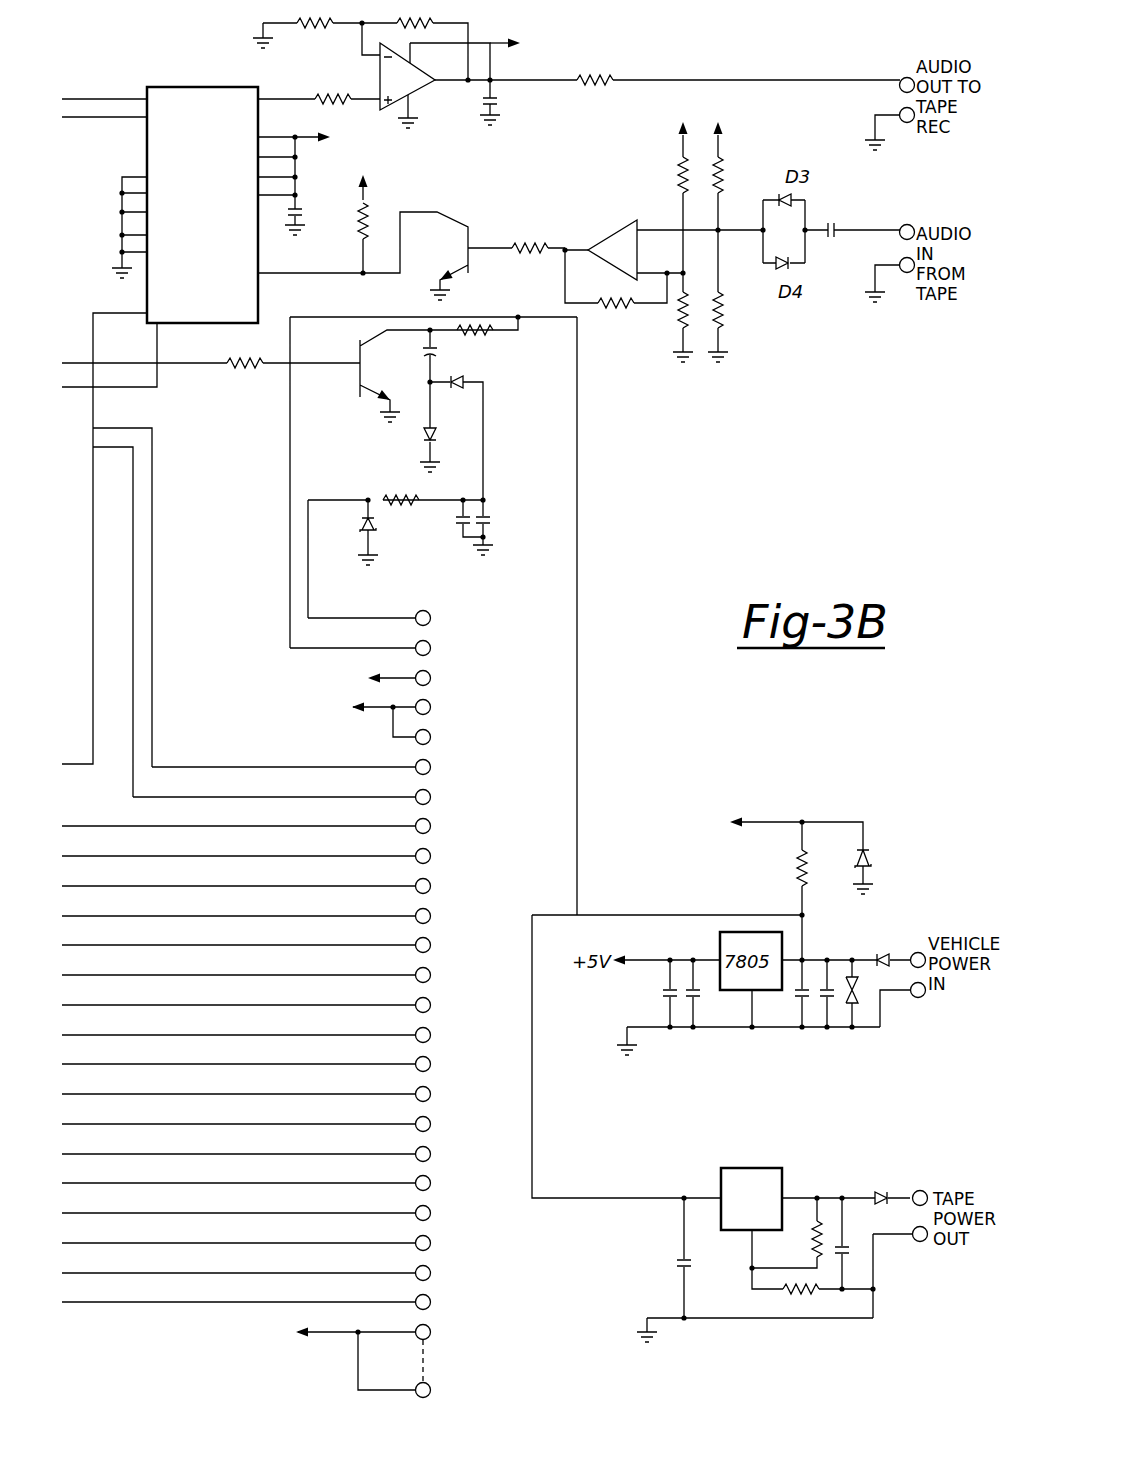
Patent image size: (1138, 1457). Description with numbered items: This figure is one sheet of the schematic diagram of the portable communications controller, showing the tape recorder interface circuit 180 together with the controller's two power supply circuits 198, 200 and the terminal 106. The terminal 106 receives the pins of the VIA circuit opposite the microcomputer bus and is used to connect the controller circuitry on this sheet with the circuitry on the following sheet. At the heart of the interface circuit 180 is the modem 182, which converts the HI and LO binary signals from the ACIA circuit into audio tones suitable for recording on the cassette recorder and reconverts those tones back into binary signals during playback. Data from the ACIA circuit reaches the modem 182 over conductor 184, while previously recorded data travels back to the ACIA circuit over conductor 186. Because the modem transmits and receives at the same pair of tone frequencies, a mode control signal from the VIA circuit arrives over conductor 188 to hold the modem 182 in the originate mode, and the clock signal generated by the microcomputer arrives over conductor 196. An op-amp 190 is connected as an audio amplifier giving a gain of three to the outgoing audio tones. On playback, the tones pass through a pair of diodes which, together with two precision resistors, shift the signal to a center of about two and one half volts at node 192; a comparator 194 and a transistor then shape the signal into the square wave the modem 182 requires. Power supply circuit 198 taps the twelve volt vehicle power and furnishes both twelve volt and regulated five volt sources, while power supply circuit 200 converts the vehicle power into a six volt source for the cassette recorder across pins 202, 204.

The terminal 106 is at (525, 815).
The tape recorder interface circuit 180 is at (530, 165).
The modem 182 is at (215, 303).
The conductor 184 is at (97, 85).
The conductor 186 is at (88, 120).
The conductor 188 is at (94, 530).
The op-amp 190 is at (422, 86).
The node 192 is at (722, 236).
The comparator 194 is at (650, 180).
The conductor 196 is at (158, 378).
The power supply circuit 198 is at (945, 842).
The power supply circuit 200 is at (660, 1180).
The pin 202 is at (918, 1190).
The pin 204 is at (913, 1243).